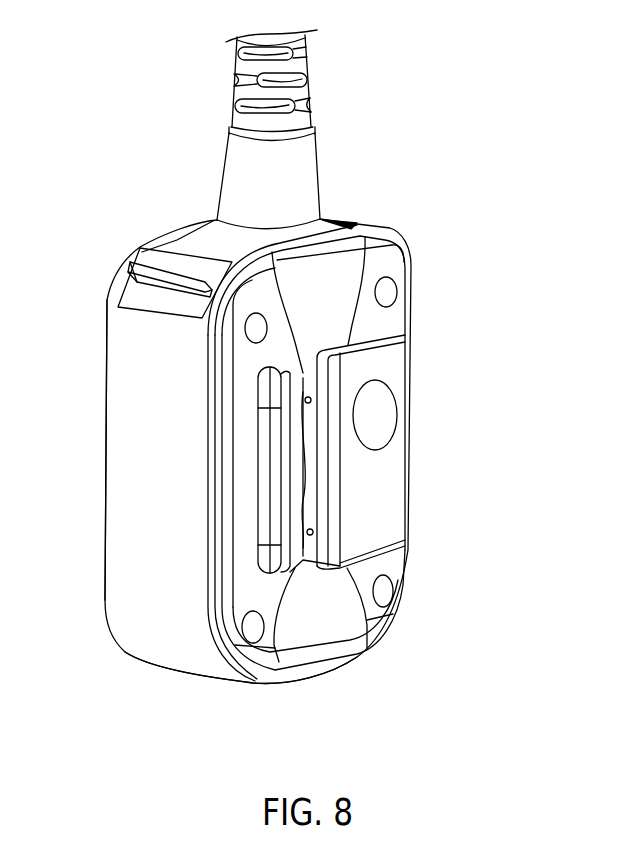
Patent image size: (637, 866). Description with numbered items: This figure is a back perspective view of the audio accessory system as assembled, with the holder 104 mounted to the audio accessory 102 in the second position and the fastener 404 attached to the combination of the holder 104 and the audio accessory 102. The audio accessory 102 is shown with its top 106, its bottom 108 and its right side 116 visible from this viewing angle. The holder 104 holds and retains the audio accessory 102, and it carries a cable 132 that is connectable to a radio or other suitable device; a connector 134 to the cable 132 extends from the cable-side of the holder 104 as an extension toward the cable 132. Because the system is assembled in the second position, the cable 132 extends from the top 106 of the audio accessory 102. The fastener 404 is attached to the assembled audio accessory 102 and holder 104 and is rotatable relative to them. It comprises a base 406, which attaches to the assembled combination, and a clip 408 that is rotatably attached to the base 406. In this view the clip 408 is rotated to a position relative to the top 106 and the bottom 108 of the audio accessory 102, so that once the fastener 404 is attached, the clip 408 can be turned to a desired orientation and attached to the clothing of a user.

The audio accessory 102 is at (414, 314).
The holder 104 is at (358, 229).
The top 106 is at (162, 243).
The bottom 108 is at (253, 685).
The right side 116 is at (131, 412).
The cable 132 is at (308, 84).
The connector 134 is at (313, 150).
The fastener 404 is at (321, 448).
The base 406 is at (273, 460).
The clip 408 is at (390, 520).